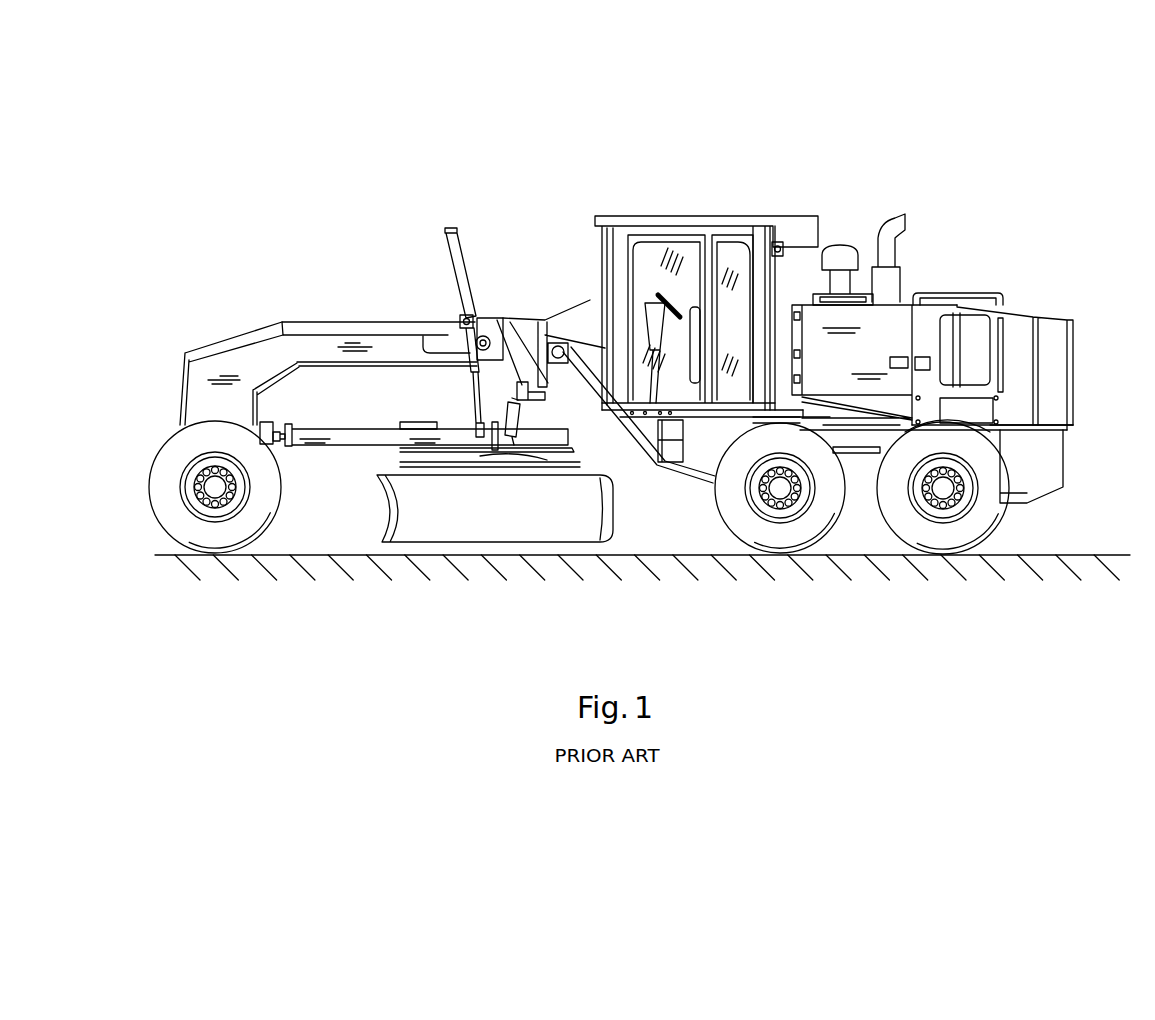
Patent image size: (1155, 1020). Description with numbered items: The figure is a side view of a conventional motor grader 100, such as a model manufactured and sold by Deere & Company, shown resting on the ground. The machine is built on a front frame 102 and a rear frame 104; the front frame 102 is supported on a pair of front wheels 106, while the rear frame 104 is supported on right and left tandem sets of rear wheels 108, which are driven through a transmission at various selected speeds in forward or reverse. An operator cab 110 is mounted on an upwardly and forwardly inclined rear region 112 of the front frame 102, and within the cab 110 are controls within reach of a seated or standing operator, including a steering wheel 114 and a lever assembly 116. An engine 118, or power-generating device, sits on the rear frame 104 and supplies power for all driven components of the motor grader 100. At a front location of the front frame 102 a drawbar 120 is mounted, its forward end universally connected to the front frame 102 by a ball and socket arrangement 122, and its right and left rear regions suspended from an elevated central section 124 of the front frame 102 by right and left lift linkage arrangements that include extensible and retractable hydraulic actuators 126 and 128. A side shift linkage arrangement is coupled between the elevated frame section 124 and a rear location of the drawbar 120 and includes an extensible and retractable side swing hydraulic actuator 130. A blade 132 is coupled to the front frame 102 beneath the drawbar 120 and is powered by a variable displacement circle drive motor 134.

The motor grader 100 is at (937, 146).
The front frame 102 is at (252, 320).
The rear frame 104 is at (1046, 508).
The front wheels 106 is at (205, 547).
The rear wheels 108 is at (768, 547).
The operator cab 110 is at (741, 216).
The rear region of the front frame 112 is at (612, 440).
The steering wheel 114 is at (661, 292).
The lever assembly 116 is at (640, 303).
The engine 118 is at (922, 327).
The drawbar 120 is at (360, 432).
The ball and socket arrangement 122 is at (278, 445).
The elevated central section 124 is at (328, 320).
The right hydraulic actuator 126 is at (450, 285).
The left hydraulic actuator 128 is at (445, 250).
The side swing hydraulic actuator 130 is at (515, 412).
The blade 132 is at (378, 520).
The variable displacement circle drive motor 134 is at (422, 420).